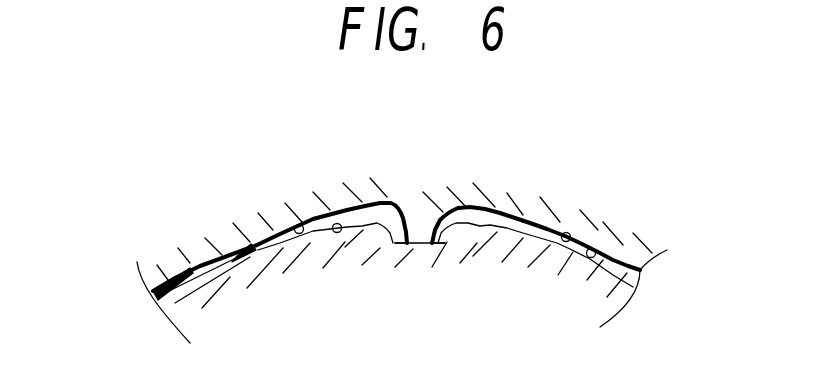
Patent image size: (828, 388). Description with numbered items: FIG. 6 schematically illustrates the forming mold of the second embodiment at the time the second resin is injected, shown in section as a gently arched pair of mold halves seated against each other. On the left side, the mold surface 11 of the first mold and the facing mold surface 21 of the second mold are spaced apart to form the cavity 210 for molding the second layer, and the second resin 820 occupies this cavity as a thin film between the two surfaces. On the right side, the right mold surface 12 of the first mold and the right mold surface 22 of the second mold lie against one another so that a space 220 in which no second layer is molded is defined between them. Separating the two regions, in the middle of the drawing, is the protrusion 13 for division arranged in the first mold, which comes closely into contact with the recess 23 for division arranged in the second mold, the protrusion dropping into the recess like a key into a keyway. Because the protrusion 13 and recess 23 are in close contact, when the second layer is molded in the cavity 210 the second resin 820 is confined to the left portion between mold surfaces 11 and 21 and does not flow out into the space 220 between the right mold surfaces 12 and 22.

The mold surface 11 is at (299, 225).
The right mold surface 12 is at (578, 233).
The protrusion for division 13 is at (426, 222).
The mold surface 21 is at (345, 238).
The right mold surface 22 is at (596, 262).
The recess for division 23 is at (401, 222).
The cavity for molding the second layer 210 is at (258, 236).
The space in which no second layer is molded 220 is at (513, 204).
The second resin 820 is at (182, 270).